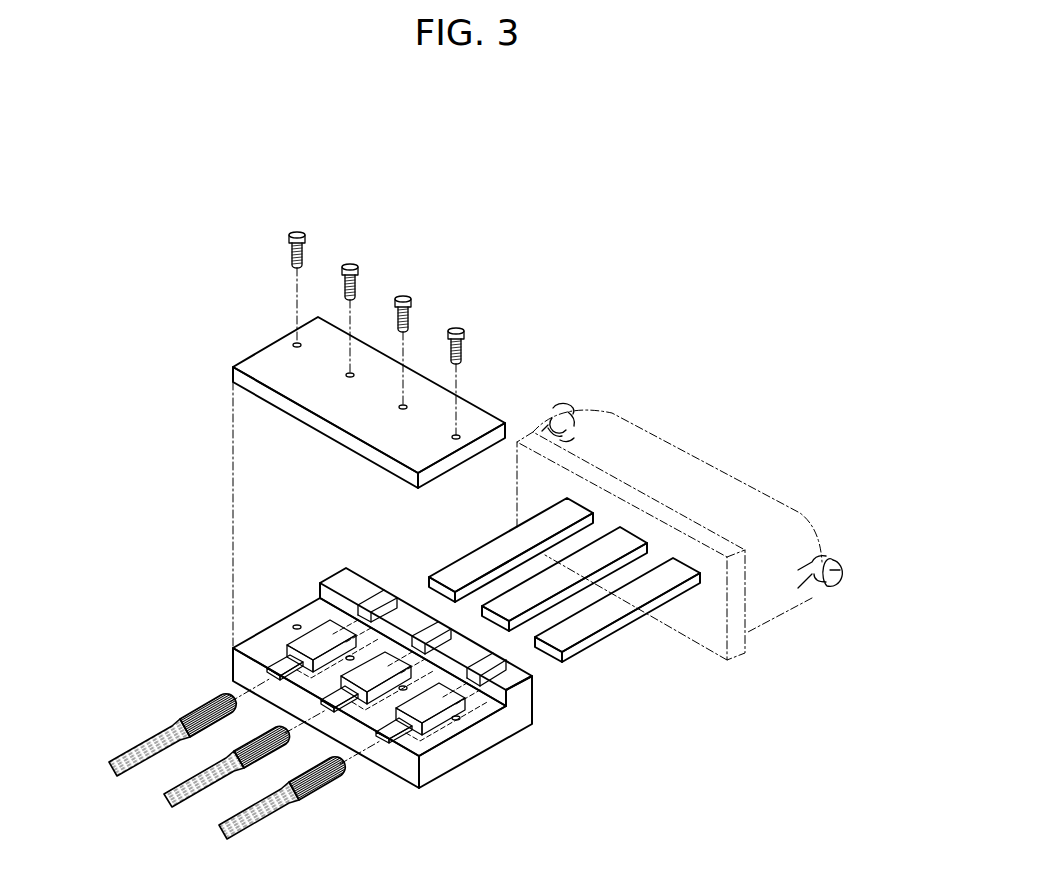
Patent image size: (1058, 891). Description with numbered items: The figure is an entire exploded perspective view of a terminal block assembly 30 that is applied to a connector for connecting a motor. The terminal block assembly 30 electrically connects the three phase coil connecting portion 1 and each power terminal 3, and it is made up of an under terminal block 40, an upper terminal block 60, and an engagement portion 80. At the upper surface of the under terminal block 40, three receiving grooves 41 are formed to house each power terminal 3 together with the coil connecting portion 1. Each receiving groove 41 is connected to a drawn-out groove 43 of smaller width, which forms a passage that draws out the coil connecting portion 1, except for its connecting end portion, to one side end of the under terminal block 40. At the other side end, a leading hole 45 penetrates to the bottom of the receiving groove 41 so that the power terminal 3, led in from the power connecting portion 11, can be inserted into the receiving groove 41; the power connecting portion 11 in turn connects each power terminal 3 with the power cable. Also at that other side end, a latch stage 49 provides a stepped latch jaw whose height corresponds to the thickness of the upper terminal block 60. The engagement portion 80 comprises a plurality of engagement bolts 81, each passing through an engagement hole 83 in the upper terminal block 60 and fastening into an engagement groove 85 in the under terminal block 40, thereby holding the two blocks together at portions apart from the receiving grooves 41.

The terminal block assembly 30 is at (462, 134).
The engagement portion 80 is at (282, 226).
The engagement bolt 81 is at (291, 256).
The engagement hole 83 is at (289, 344).
The upper terminal block 60 is at (487, 402).
The power connecting portion 11 is at (668, 438).
The power terminal 3 is at (590, 634).
The under terminal block 40 is at (500, 766).
The latch stage 49 is at (337, 597).
The leading hole 45 is at (397, 592).
The engagement groove 85 is at (295, 625).
The drawn-out groove 43 is at (268, 647).
The receiving groove 41 is at (312, 619).
The coil connecting portion 1 is at (265, 835).